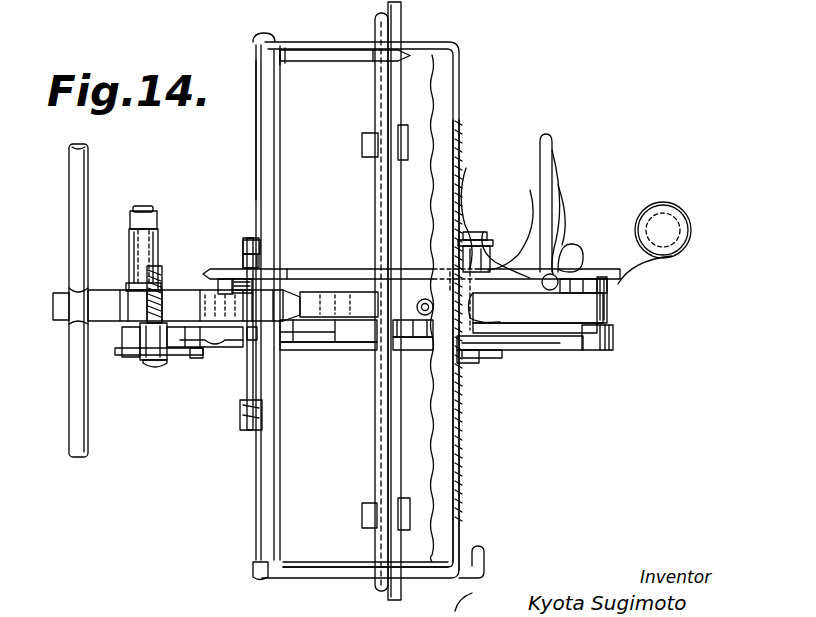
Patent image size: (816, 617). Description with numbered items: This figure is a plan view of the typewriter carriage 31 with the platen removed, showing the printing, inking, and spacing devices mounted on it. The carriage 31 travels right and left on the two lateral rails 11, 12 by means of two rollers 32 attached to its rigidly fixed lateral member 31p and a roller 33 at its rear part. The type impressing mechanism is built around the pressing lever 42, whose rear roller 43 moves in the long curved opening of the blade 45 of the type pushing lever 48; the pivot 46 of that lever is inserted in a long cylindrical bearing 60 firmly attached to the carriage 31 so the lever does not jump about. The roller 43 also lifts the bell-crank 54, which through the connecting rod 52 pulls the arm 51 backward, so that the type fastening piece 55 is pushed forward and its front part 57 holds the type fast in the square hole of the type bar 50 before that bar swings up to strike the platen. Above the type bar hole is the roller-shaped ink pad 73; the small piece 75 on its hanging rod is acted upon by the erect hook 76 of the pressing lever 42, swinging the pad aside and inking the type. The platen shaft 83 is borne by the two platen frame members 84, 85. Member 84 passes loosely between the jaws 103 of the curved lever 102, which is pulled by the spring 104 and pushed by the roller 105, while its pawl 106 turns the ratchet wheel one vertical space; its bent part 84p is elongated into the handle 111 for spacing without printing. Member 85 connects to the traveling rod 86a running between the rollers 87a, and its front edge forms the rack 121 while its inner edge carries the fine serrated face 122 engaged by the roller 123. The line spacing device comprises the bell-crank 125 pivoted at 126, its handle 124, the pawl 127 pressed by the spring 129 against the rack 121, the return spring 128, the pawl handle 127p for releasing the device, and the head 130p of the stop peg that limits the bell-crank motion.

The rail 11 is at (75, 345).
The roller 33 is at (78, 292).
The carriage 31 is at (120, 290).
The long cylindrical bearing 60 is at (143, 228).
The pivot 46 is at (133, 243).
The curved lever 102 is at (218, 262).
The spring 104 is at (244, 257).
The roller 105 is at (243, 246).
The jaws 103 is at (288, 266).
The pressing lever 42 is at (205, 258).
The rollers 87a is at (262, 250).
The roller 43 is at (148, 368).
The blade 45 is at (177, 357).
The bell-crank 54 is at (230, 347).
The type pushing lever 48 is at (190, 332).
The platen frame member 84 is at (280, 174).
The traveling rod 86a is at (256, 143).
The platen frame member 85 is at (420, 48).
The handle 111 is at (470, 556).
The bent part 84p is at (308, 50).
The pawl 106 is at (286, 65).
The platen shaft 83 is at (375, 473).
The rail 12 is at (397, 197).
The rollers 32 is at (385, 130).
The lateral member 31p is at (333, 290).
The connecting rod 52 is at (322, 350).
The roller 123 is at (417, 312).
The rack 121 is at (458, 125).
The serrated face 122 is at (565, 125).
The spring 129 is at (470, 232).
The head 130p is at (467, 172).
The handle 127p is at (530, 190).
The handle 124 is at (554, 162).
The bell-crank 125 is at (560, 176).
The pivot 126 is at (564, 203).
The spring 128 is at (565, 226).
The erect hook 76 is at (590, 270).
The small piece 75 is at (612, 282).
The pawl 127 is at (475, 312).
The front part 57 is at (575, 333).
The ink pad 73 is at (613, 338).
The type bar 50 is at (521, 336).
The type fastening piece 55 is at (510, 350).
The arm 51 is at (478, 356).